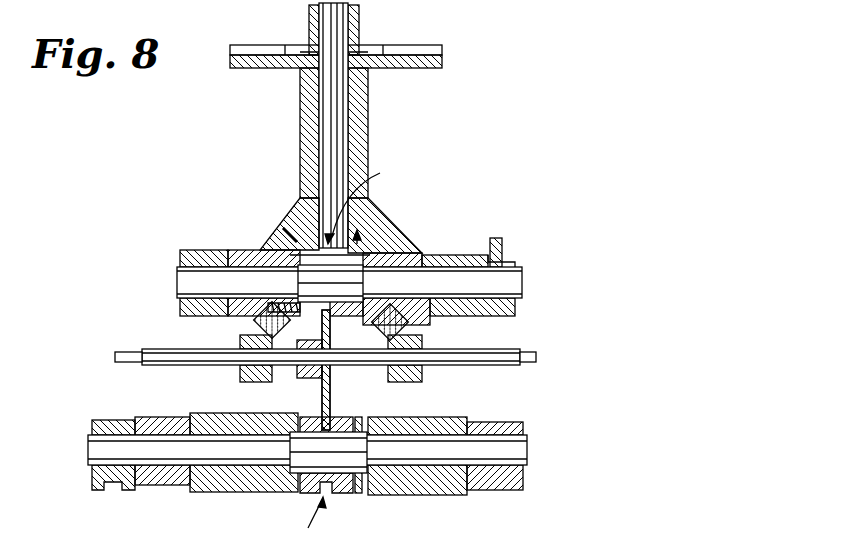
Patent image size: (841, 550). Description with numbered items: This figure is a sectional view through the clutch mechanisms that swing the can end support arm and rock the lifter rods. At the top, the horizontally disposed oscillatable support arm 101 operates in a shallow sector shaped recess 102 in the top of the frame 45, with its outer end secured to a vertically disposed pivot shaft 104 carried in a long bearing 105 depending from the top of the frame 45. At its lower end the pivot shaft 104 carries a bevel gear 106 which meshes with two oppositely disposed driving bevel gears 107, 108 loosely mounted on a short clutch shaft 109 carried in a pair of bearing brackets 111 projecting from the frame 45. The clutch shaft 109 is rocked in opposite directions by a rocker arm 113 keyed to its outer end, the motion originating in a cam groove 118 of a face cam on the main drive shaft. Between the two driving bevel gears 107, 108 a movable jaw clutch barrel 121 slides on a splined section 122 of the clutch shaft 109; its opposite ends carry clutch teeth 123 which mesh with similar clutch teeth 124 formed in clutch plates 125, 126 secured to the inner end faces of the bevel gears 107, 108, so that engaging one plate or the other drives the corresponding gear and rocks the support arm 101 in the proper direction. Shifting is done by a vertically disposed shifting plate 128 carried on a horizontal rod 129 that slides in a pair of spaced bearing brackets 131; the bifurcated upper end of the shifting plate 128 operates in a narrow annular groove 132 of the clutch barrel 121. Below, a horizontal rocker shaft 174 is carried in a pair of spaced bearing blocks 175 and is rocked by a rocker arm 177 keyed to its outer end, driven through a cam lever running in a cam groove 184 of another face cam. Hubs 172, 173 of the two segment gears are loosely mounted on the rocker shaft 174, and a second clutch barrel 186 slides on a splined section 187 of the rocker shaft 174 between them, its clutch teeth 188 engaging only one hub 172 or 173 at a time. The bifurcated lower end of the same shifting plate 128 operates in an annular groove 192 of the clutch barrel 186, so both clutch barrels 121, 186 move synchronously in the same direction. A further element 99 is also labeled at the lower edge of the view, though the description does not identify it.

The support arm 101 is at (358, 33).
The sector shaped recess 102 is at (433, 52).
The frame 45 is at (440, 68).
The pivot shaft 104 is at (327, 98).
The bearing 105 is at (356, 131).
The annular groove 132 is at (376, 203).
The bevel gear 106 is at (366, 212).
The driving bevel gear 108 is at (400, 258).
The clutch teeth 123 is at (300, 201).
The bearing brackets 111 is at (190, 258).
The driving bevel gear 107 is at (300, 246).
The clutch teeth 124 is at (428, 220).
The clutch plate 125 is at (270, 256).
The rocker arm 113 is at (503, 248).
The clutch barrel 121 is at (337, 306).
The clutch shaft 109 is at (192, 274).
The splined section 122 is at (336, 287).
The clutch plate 126 is at (378, 306).
The shifting plate 128 is at (331, 398).
The bearing brackets 131 is at (246, 367).
The horizontal rod 129 is at (191, 356).
The bearing blocks 175 is at (160, 482).
The rocker arm 177 is at (95, 478).
The hub 172 is at (233, 473).
The clutch barrel 186 is at (310, 492).
The clutch teeth 188 is at (357, 497).
The hub 173 is at (437, 496).
The rocker shaft 174 is at (505, 456).
The splined section 187 is at (338, 455).
The annular groove 192 is at (304, 523).
The cam groove 184 is at (221, 545).
The shaft 99 is at (517, 545).
The cam groove 118 is at (632, 542).